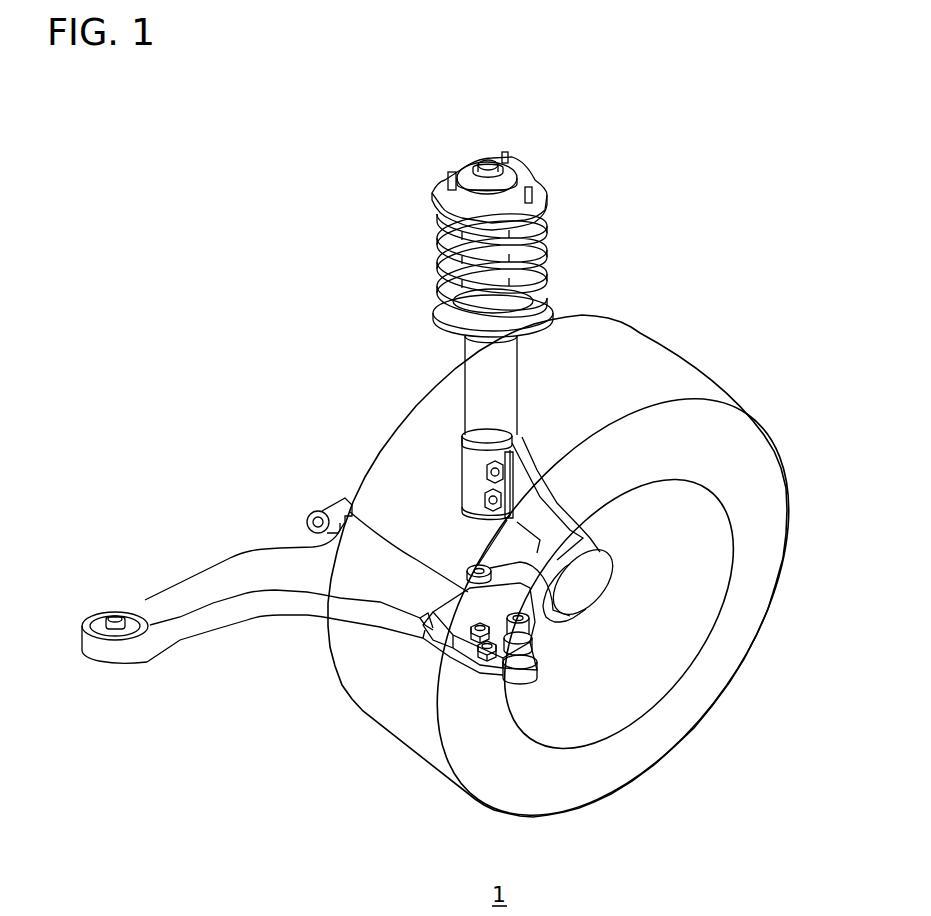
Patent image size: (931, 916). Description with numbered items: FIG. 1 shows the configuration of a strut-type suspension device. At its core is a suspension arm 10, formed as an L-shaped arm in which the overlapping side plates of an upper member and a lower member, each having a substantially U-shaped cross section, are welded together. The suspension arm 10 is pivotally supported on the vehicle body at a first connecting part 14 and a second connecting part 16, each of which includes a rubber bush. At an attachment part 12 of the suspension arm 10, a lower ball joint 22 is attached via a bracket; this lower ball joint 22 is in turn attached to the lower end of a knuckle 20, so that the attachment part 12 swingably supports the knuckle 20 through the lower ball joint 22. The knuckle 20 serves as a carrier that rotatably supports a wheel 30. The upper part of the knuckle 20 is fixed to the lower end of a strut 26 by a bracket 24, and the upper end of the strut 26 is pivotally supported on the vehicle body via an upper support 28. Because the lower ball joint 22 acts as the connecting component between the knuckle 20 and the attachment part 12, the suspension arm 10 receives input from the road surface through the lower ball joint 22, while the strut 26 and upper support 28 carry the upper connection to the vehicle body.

The suspension arm 10 is at (292, 605).
The attachment part 12 is at (450, 630).
The first connecting part 14 is at (340, 500).
The second connecting part 16 is at (115, 620).
The knuckle 20 is at (593, 533).
The lower ball joint 22 is at (530, 662).
The bracket 24 is at (475, 472).
The strut 26 is at (493, 317).
The upper support 28 is at (535, 162).
The wheel 30 is at (738, 428).